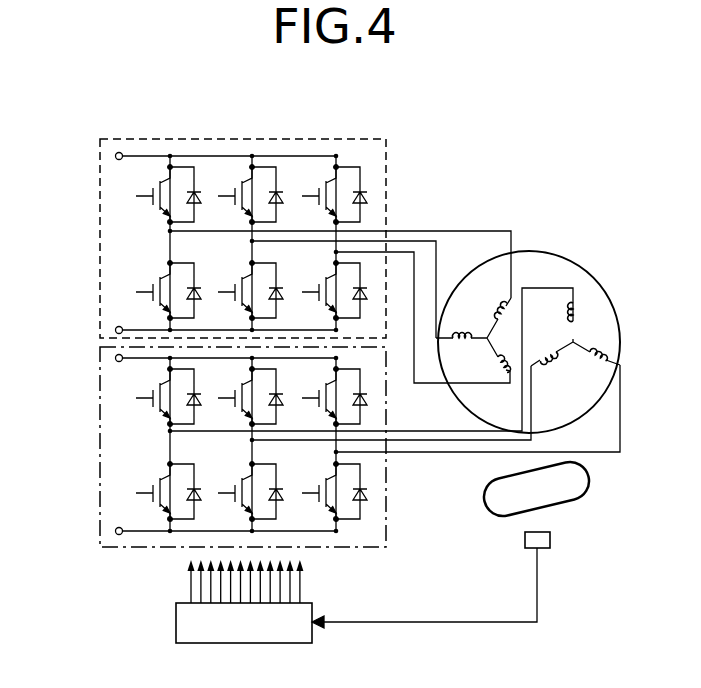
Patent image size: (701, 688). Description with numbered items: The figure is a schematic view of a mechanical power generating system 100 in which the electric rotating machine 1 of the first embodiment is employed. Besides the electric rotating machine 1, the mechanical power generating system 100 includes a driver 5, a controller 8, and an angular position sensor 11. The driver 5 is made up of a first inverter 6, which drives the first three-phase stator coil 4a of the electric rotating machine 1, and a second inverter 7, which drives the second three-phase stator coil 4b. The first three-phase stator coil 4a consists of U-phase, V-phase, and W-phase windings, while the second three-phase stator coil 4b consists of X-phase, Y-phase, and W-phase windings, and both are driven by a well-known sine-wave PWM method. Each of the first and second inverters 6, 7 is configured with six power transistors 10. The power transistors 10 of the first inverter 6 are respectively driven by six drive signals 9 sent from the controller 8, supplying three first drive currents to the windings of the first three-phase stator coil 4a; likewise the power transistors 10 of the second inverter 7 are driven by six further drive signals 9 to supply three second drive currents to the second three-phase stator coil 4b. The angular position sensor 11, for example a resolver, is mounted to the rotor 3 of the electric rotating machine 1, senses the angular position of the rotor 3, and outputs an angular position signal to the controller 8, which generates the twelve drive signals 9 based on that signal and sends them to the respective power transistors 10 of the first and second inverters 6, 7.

The mechanical power generating system 100 is at (552, 121).
The driver 5 is at (89, 132).
The first inverter 6 is at (100, 252).
The second inverter 7 is at (102, 454).
The power transistor 10 is at (205, 166).
The electric rotating machine 1 is at (623, 308).
The first three-phase stator coil 4a is at (474, 294).
The second three-phase stator coil 4b is at (598, 298).
The rotor 3 is at (585, 500).
The angular position sensor 11 is at (548, 540).
The controller 8 is at (200, 637).
The drive signal 9 is at (192, 590).